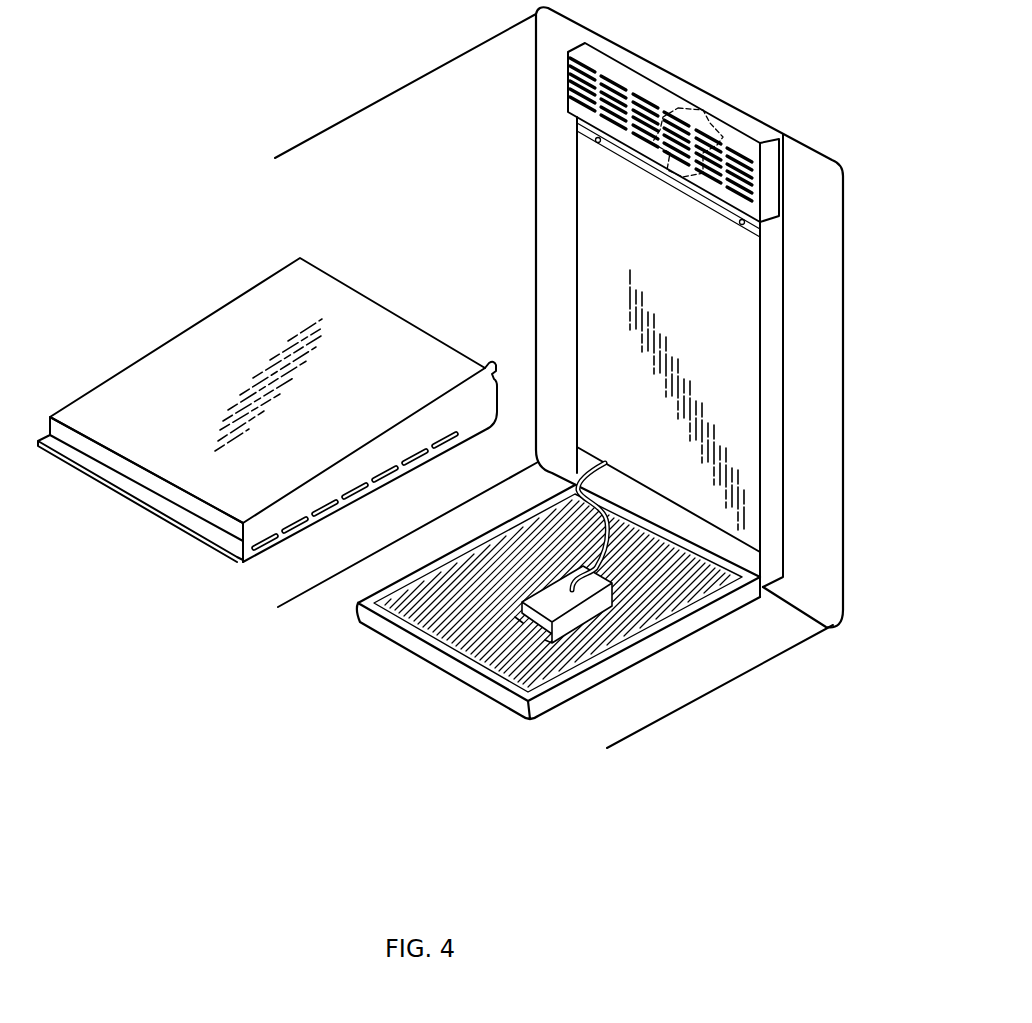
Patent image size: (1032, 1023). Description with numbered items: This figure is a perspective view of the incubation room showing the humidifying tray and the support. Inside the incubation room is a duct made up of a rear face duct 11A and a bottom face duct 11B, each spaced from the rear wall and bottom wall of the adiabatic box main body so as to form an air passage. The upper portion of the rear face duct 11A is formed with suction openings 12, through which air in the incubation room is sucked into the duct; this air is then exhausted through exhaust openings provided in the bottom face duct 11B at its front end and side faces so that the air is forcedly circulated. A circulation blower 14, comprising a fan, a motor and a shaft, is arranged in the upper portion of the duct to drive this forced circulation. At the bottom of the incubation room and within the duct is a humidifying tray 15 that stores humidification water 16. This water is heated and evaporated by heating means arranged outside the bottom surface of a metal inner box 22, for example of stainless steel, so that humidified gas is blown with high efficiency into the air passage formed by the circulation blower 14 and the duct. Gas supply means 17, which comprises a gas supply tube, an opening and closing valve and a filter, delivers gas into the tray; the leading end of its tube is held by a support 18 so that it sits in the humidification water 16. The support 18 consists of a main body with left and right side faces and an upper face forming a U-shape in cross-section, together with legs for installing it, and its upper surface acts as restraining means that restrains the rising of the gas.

The rear face duct 11A is at (617, 258).
The bottom face duct 11B is at (187, 468).
The suction openings 12 is at (728, 151).
The circulation blower 14 is at (655, 147).
The humidifying tray 15 is at (380, 636).
The humidification water 16 is at (467, 650).
The gas supply means 17 is at (603, 568).
The support 18 is at (551, 601).
The inner box 22 is at (810, 525).